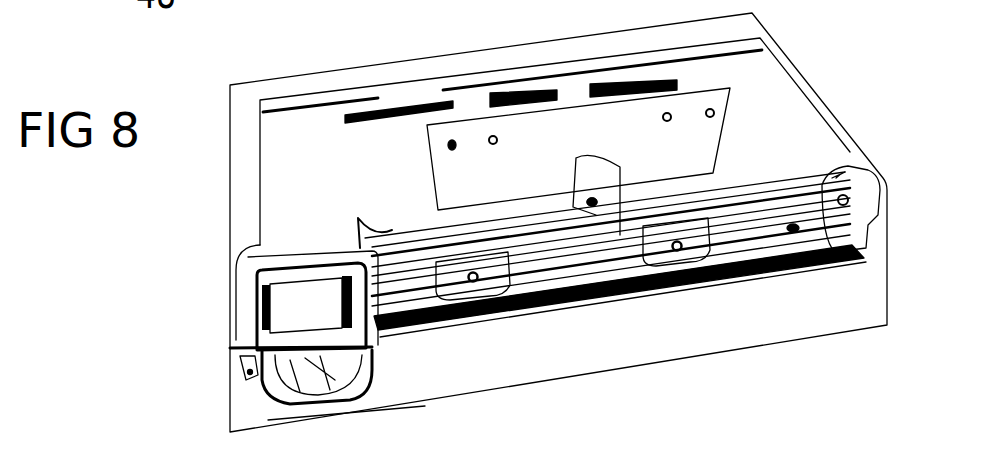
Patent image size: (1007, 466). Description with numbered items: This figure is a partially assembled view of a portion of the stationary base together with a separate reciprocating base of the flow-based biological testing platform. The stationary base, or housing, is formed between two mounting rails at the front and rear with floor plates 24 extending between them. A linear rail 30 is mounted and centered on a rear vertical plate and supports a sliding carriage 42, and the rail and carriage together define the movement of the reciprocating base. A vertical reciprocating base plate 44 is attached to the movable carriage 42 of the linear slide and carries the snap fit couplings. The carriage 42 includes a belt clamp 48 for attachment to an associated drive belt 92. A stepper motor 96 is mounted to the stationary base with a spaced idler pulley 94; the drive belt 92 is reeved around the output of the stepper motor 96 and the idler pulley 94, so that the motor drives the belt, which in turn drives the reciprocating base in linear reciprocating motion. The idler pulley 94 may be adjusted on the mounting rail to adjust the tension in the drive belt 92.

The floor plate 24 is at (320, 186).
The linear rail 30 is at (372, 228).
The sliding carriage 42 is at (596, 195).
The vertical reciprocating base plate 44 is at (520, 194).
The belt clamp 48 is at (596, 215).
The drive belt 92 is at (792, 178).
The idler pulley 94 is at (855, 175).
The stepper motor 96 is at (232, 348).